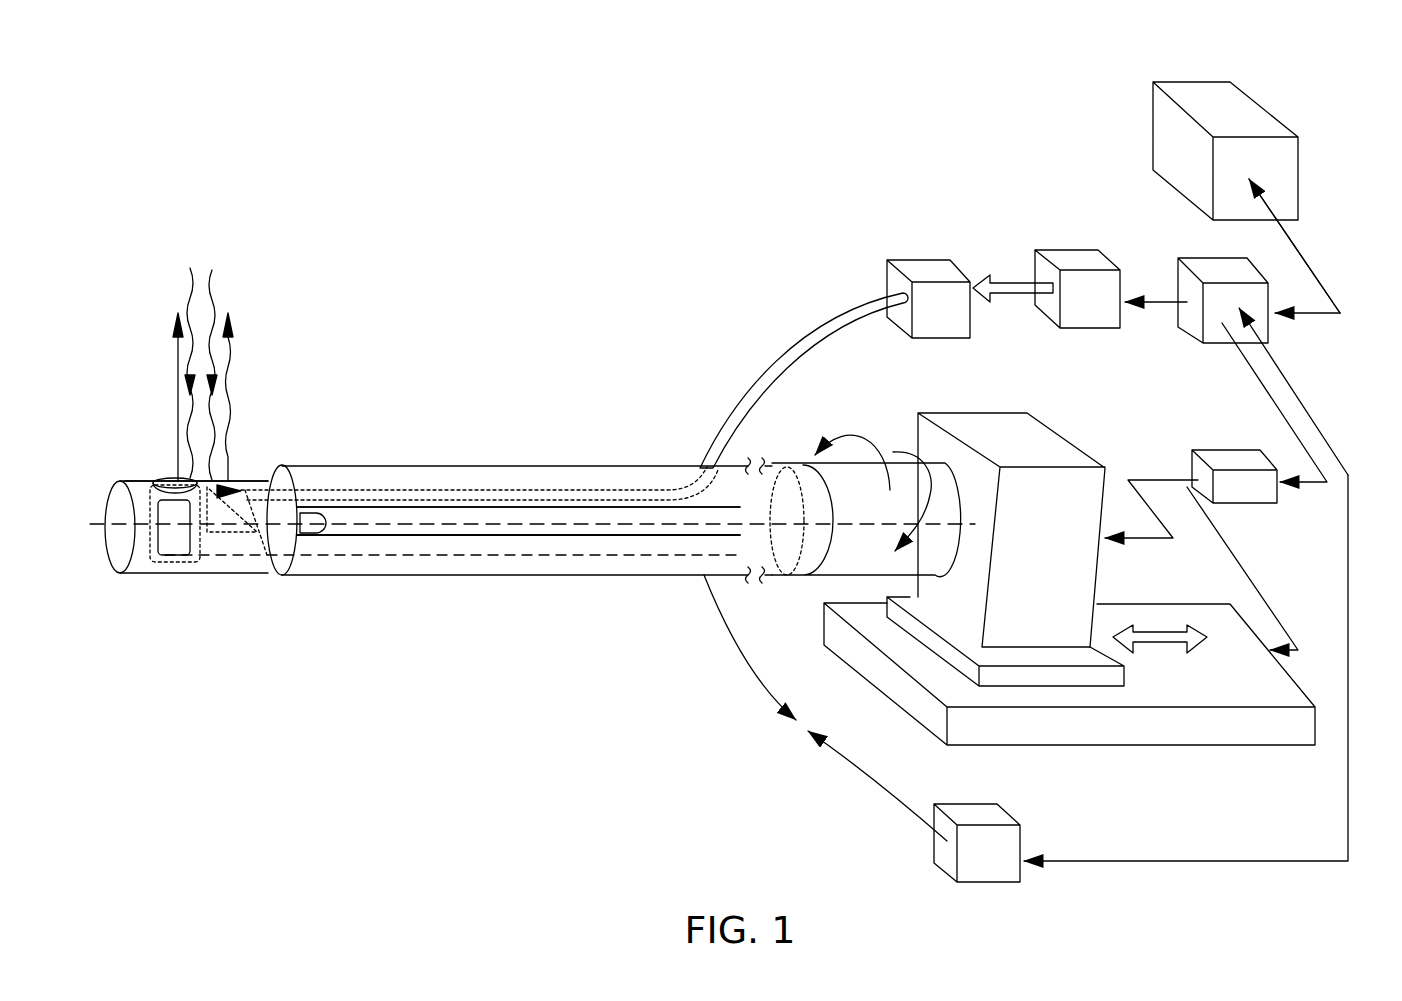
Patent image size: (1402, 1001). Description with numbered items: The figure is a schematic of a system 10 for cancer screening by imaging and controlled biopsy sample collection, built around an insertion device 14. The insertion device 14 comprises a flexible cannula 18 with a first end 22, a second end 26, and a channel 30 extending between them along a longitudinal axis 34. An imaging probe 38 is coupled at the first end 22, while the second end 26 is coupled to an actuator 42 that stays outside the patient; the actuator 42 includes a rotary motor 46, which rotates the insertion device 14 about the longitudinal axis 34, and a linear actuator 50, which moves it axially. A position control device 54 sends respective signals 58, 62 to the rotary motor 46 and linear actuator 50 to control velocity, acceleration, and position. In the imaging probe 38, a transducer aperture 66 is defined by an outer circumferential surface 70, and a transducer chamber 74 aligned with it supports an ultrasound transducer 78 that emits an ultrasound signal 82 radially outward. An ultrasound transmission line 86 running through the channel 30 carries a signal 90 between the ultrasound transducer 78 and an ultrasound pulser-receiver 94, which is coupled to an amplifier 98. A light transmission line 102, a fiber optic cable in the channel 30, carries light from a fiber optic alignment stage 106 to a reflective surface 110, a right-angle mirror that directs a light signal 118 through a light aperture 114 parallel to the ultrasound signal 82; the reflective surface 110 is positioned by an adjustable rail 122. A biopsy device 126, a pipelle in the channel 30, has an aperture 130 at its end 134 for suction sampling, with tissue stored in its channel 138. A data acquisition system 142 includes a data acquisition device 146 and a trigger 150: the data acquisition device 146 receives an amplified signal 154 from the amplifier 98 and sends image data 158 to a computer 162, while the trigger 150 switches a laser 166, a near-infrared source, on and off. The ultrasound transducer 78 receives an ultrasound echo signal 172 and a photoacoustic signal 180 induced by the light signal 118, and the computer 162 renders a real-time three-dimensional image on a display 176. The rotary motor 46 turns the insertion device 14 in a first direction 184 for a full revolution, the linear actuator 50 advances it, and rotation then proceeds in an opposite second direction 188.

The system 10 is at (363, 170).
The insertion device 14 is at (539, 406).
The flexible cannula 18 is at (596, 464).
The first end 22 is at (266, 485).
The second end 26 is at (812, 463).
The channel 30 is at (655, 470).
The longitudinal axis 34 is at (520, 560).
The imaging probe 38 is at (132, 573).
The actuator 42 is at (1077, 410).
The rotary motor 46 is at (933, 413).
The linear actuator 50 is at (1103, 733).
The position control device 54 is at (1232, 457).
The signal 58 is at (1128, 480).
The signal 62 is at (1243, 570).
The transducer aperture 66 is at (162, 479).
The outer circumferential surface 70 is at (140, 481).
The transducer chamber 74 is at (157, 563).
The ultrasound transducer 78 is at (185, 555).
The ultrasound signal 82 is at (178, 357).
The ultrasound transmission line 86 is at (357, 553).
The signal 90 is at (766, 683).
The ultrasound pulser-receiver 94 is at (977, 870).
The amplifier 98 is at (983, 886).
The light transmission line 102 is at (376, 490).
The fiber optic alignment stage 106 is at (927, 260).
The reflective surface 110 is at (267, 555).
The light aperture 114 is at (233, 484).
The light signal 118 is at (233, 338).
The adjustable rail 122 is at (220, 535).
The biopsy device 126 is at (402, 560).
The aperture 130 is at (303, 527).
The end 134 is at (300, 513).
The channel 138 is at (445, 528).
The data acquisition system 142 is at (1283, 266).
The data acquisition device 146 is at (1256, 308).
The trigger 150 is at (1270, 333).
The amplified signal 154 is at (1323, 432).
The image data 158 is at (1337, 300).
The computer 162 is at (1208, 121).
The laser 166 is at (1068, 250).
The ultrasound echo signal 172 is at (190, 275).
The display 176 is at (1175, 80).
The photoacoustic signal 180 is at (213, 283).
The first direction 184 is at (852, 428).
The second direction 188 is at (927, 490).